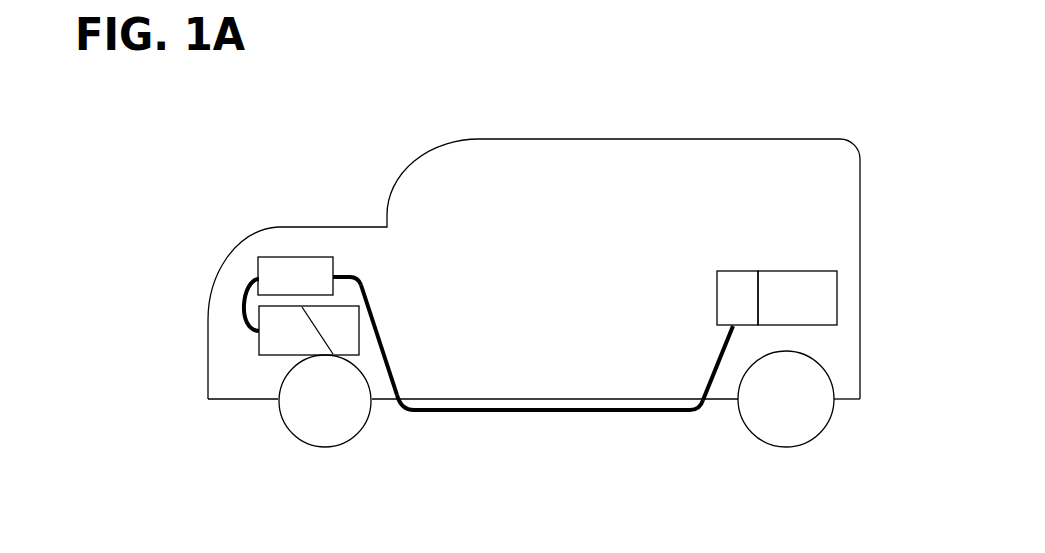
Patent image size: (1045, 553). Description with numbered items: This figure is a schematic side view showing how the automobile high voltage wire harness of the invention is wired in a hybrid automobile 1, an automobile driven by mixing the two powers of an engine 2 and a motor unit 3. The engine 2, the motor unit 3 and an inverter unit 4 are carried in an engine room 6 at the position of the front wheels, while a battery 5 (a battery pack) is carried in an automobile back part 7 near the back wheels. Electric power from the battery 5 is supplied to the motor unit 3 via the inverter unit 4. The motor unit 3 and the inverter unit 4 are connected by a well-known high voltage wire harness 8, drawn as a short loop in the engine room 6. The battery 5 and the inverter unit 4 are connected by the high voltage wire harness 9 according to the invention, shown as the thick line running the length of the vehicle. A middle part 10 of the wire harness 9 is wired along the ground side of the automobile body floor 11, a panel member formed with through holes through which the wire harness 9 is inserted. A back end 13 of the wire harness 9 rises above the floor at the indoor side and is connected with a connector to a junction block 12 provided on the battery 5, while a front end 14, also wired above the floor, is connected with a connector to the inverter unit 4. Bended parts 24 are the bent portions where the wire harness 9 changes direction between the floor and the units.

The hybrid automobile 1 is at (334, 156).
The engine 2 is at (347, 342).
The motor unit 3 is at (277, 342).
The inverter unit 4 is at (288, 268).
The battery 5 is at (800, 287).
The engine room 6 is at (222, 374).
The automobile back part 7 is at (845, 350).
The high voltage wire harness 8 is at (243, 290).
The high voltage wire harness 9 is at (546, 415).
The middle part 10 is at (588, 412).
The automobile body floor 11 is at (628, 402).
The junction block 12 is at (735, 287).
The back end 13 is at (728, 337).
The front end 14 is at (347, 270).
The bended parts 24 is at (363, 277).